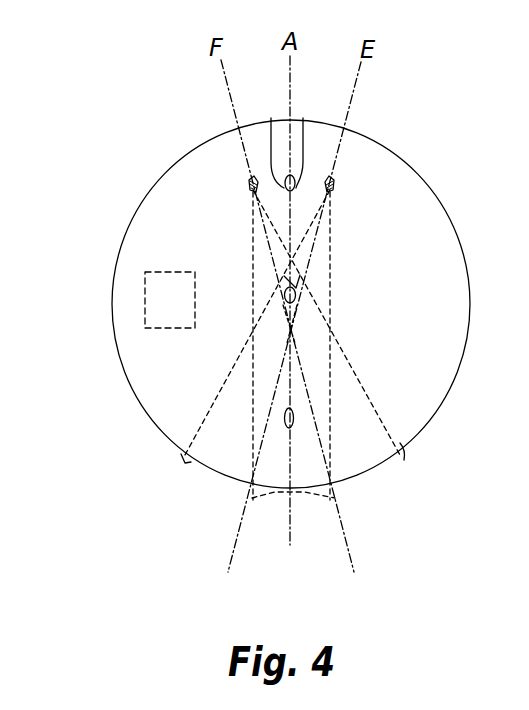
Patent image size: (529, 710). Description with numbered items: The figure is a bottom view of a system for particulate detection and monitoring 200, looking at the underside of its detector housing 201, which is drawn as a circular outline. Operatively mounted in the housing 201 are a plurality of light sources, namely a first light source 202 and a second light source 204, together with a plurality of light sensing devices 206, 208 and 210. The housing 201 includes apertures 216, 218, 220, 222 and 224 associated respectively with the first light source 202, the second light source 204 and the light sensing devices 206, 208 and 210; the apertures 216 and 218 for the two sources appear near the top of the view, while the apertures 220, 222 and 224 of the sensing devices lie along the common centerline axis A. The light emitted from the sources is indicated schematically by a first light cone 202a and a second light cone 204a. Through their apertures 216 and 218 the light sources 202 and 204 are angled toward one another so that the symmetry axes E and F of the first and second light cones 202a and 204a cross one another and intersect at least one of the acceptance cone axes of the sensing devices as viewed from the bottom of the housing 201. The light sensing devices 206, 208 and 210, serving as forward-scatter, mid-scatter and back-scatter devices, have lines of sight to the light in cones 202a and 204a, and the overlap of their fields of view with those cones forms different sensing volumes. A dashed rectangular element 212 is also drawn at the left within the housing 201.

The system for particulate detection and monitoring 200 is at (94, 168).
The housing 201 is at (445, 226).
The first light source 202 is at (337, 192).
The second light source 204 is at (248, 194).
The light sensing device 206 is at (294, 412).
The light sensing device 208 is at (300, 294).
The light sensing device 210 is at (303, 120).
The controller 212 is at (140, 303).
The aperture 216 is at (338, 182).
The aperture 218 is at (247, 184).
The aperture 220 is at (284, 412).
The aperture 222 is at (297, 287).
The aperture 224 is at (271, 120).
The first light cone 202a is at (224, 388).
The second light cone 204a is at (365, 378).